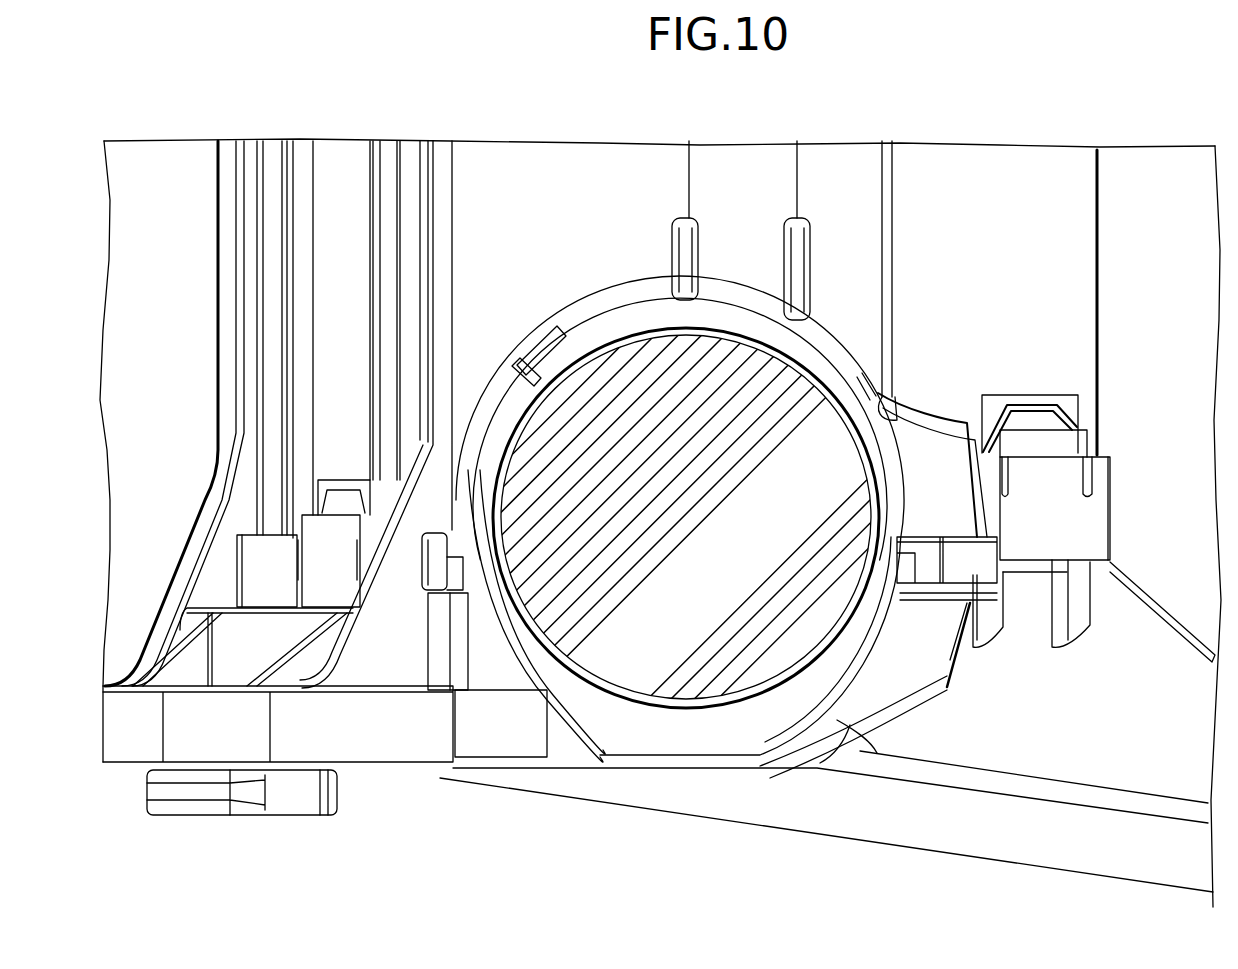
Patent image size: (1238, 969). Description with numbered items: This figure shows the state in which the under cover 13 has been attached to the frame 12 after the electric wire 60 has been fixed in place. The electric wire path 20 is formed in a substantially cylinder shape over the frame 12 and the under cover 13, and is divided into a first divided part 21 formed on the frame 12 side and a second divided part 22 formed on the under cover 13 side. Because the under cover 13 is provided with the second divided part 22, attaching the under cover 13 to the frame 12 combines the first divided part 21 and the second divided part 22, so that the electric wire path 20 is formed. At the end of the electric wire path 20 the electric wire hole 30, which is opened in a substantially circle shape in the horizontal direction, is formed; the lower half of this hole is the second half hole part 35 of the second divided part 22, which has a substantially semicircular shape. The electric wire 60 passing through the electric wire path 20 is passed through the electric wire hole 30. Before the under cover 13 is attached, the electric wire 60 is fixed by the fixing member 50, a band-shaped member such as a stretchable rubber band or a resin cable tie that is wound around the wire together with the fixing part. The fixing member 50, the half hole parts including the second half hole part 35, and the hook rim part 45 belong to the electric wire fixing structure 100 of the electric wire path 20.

The electric wire fixing structure 100 is at (755, 220).
The frame 12 is at (1062, 180).
The under cover 13 is at (975, 830).
The electric wire path 20 is at (587, 298).
The first divided part 21 is at (927, 455).
The second divided part 22 is at (915, 648).
The electric wire hole 30 is at (507, 393).
The second half hole part 35 is at (813, 717).
The hook rim part 45 is at (650, 297).
The fixing member 50 is at (766, 690).
The electric wire 60 is at (695, 672).